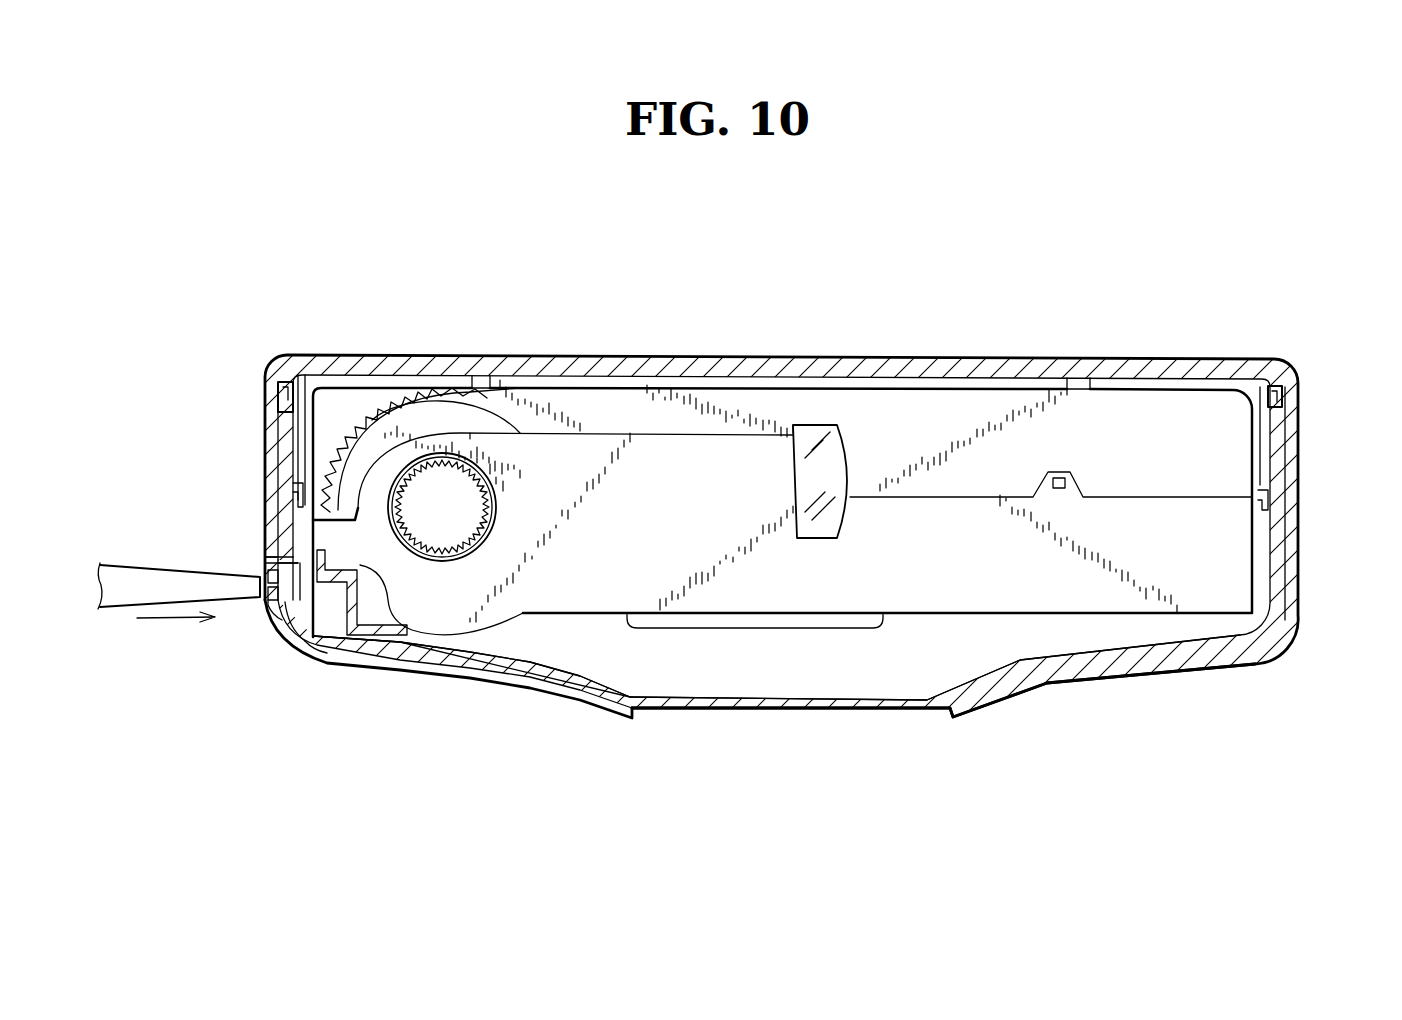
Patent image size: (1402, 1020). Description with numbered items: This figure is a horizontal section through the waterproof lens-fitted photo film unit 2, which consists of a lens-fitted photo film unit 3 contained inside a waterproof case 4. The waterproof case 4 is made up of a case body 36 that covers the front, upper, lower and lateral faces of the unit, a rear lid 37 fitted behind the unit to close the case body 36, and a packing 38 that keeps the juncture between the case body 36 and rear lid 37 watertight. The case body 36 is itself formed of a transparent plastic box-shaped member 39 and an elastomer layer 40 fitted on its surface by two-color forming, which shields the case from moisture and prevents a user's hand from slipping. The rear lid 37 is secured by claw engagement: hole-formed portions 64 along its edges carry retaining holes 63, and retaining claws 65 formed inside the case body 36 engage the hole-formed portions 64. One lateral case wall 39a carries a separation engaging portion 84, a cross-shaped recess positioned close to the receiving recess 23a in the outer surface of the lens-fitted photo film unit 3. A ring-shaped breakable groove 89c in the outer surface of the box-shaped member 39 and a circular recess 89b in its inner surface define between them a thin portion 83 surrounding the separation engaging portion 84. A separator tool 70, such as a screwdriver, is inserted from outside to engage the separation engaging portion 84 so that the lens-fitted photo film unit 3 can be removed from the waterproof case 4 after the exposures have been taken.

The waterproof lens-fitted photo film unit 2 is at (784, 312).
The lens-fitted photo film unit 3 is at (939, 400).
The waterproof case 4 is at (433, 353).
The receiving recess 23a is at (387, 600).
The case body 36 is at (467, 783).
The rear lid 37 is at (651, 358).
The packing 38 is at (283, 383).
The box-shaped member 39 is at (553, 683).
The lateral case wall 39a is at (266, 397).
The elastomer layer 40 is at (477, 683).
The retaining holes 63 is at (320, 393).
The hole-formed portions 64 is at (297, 483).
The retaining claws 65 is at (293, 487).
The separator tool 70 is at (122, 575).
The thin portion 83 is at (272, 562).
The separation engaging portion 84 is at (267, 600).
The circular recess 89b is at (322, 657).
The ring-shaped breakable groove 89c is at (276, 630).